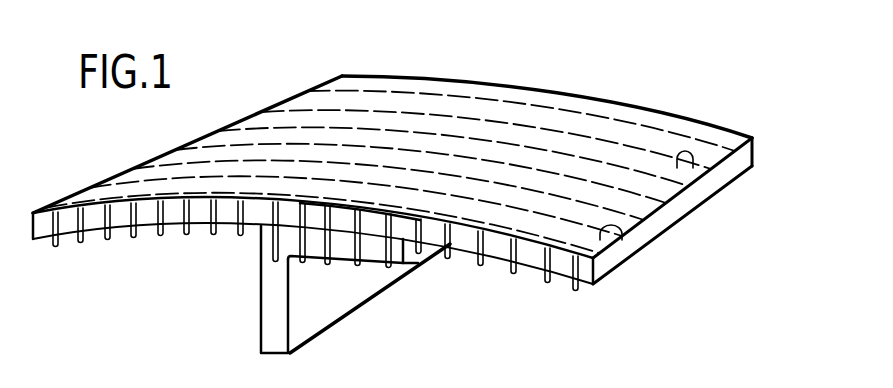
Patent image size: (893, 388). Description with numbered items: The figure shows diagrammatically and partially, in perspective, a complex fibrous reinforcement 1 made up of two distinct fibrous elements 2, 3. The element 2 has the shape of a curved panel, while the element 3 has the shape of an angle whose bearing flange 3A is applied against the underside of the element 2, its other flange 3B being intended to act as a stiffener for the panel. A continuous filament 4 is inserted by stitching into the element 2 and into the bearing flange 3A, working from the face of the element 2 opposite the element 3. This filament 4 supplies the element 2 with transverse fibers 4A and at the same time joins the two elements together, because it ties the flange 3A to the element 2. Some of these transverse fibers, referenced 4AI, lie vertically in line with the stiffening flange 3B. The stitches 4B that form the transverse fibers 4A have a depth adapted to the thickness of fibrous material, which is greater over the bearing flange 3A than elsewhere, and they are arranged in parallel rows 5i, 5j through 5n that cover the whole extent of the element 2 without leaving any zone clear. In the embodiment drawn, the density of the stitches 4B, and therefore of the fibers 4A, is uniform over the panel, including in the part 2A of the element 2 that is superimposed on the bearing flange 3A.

The complex reinforcement 1 is at (192, 163).
The distinct fibrous element 2 is at (203, 217).
The part of the element superimposed on the bearing flange 2A is at (338, 216).
The distinct fibrous element 3 is at (320, 304).
The bearing flange 3A is at (313, 245).
The stiffening flange 3B is at (267, 323).
The continuous filament 4 is at (460, 212).
The transverse fibers 4A is at (127, 214).
The transverse fibers located in line with the stiffening flange 4AI is at (274, 244).
The stitches 4B is at (390, 267).
The row of stitches 5i is at (627, 243).
The row of stitches 5j is at (577, 200).
The row of stitches 5n is at (704, 140).